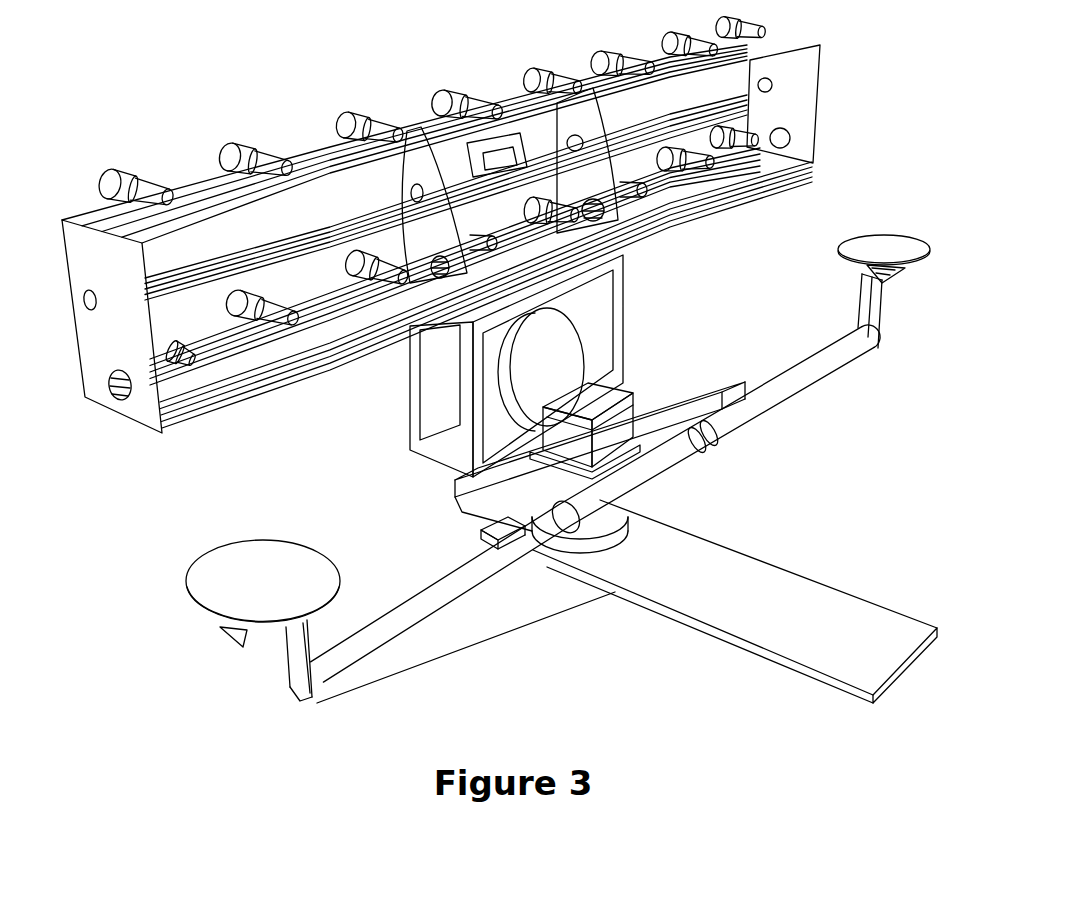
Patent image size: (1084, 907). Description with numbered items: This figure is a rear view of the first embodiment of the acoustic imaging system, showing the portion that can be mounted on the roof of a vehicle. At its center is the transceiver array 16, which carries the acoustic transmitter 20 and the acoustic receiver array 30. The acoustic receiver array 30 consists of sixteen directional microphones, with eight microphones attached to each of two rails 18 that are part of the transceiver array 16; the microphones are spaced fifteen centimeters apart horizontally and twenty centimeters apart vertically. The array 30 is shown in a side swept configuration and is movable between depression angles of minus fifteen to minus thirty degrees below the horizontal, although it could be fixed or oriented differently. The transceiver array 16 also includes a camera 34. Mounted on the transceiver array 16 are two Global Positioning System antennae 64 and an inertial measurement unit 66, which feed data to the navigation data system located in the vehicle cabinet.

The transceiver array 16 is at (300, 451).
The rails 18 is at (755, 190).
The acoustic transmitter 20 is at (517, 373).
The acoustic receiver array 30 is at (795, 91).
The camera 34 is at (503, 145).
The Global Positioning System (GPS) antennae 64 is at (877, 247).
The inertial measurement unit (IMU) 66 is at (610, 397).